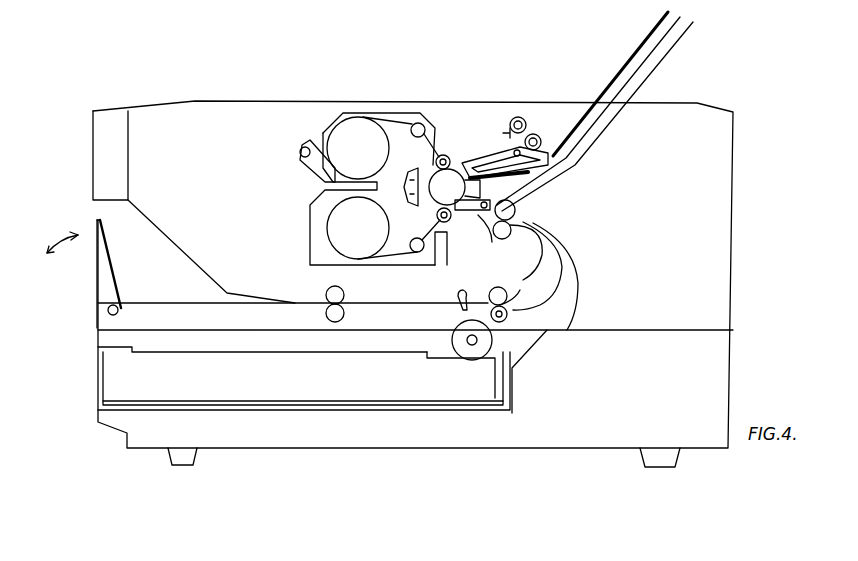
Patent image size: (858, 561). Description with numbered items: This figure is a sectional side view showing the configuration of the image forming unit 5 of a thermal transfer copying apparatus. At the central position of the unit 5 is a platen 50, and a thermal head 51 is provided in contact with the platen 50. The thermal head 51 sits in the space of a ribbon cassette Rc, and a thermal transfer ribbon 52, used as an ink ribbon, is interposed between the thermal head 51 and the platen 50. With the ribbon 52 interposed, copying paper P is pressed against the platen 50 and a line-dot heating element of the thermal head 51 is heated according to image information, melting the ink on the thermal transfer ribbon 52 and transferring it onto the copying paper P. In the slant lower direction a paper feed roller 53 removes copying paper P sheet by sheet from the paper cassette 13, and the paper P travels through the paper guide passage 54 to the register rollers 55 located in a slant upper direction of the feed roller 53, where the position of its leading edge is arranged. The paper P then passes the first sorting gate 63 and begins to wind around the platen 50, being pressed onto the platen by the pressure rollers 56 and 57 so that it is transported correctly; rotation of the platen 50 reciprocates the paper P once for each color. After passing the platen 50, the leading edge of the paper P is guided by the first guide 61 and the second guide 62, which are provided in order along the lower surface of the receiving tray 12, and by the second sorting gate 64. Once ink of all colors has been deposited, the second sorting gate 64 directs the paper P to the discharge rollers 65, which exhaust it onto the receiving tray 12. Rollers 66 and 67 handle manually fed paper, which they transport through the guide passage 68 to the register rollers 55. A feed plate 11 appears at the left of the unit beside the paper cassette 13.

The image forming unit 5 is at (260, 99).
The sheet feed guide plate 11 is at (97, 268).
The receiving tray 12 is at (643, 37).
The paper cassette 13 is at (96, 378).
The copying paper P is at (355, 385).
The ribbon cassette Rc is at (370, 110).
The platen 50 is at (451, 206).
The thermal head 51 is at (421, 172).
The thermal transfer ribbon 52 is at (444, 150).
The paper feed roller 53 is at (455, 330).
The paper guide passage 54 is at (572, 308).
The register rollers 55 is at (511, 226).
The pressure roller 56 is at (466, 288).
The pressure roller 57 is at (452, 162).
The first guide 61 is at (686, 34).
The second guide 62 is at (670, 55).
The first sorting gate 63 is at (484, 220).
The second sorting gate 64 is at (490, 160).
The discharge rollers 65 is at (526, 120).
The roller 66 is at (347, 300).
The roller 67 is at (508, 297).
The guide passage 68 is at (558, 266).